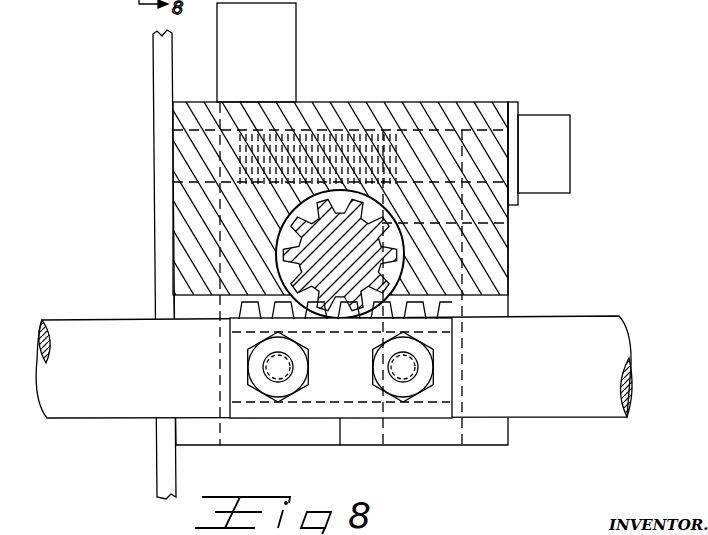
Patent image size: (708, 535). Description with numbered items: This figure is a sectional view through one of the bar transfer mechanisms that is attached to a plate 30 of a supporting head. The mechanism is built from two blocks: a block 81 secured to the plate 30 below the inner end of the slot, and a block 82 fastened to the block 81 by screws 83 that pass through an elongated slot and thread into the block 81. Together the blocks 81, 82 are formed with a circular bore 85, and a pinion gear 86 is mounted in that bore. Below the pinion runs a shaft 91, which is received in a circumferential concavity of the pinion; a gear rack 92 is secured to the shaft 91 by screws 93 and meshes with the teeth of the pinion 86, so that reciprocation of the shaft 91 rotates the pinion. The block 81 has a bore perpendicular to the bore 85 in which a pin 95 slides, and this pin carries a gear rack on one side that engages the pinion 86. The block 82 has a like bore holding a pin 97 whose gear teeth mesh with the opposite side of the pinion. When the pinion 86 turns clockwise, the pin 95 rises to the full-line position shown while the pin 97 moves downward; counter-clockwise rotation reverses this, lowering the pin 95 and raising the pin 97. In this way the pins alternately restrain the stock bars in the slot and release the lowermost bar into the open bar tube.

The plate 30 is at (156, 63).
The pin 95 is at (256, 52).
The block 81 is at (243, 110).
The block 82 is at (428, 105).
The screws 83 is at (540, 120).
The circular bore 85 is at (343, 195).
The pinion gear 86 is at (330, 224).
The shaft 91 is at (334, 367).
The gear rack 92 is at (440, 345).
The screws 93 is at (392, 364).
The pin 97 is at (508, 223).